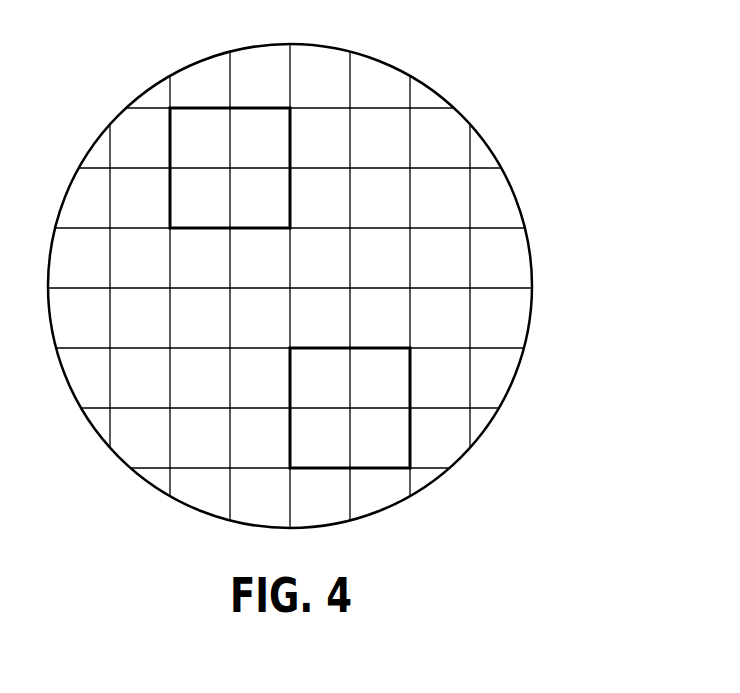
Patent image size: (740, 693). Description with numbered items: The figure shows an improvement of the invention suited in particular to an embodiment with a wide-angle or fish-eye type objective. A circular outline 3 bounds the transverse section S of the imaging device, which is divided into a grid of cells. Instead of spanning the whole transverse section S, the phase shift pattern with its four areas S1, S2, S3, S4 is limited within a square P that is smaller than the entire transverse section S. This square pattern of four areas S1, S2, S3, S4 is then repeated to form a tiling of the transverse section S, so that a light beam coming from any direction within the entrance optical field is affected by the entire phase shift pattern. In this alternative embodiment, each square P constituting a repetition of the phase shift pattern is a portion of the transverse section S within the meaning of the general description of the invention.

The wafer 3 is at (461, 112).
The transverse section S is at (513, 178).
The square P is at (198, 103).
The area S1 is at (218, 152).
The area S2 is at (278, 152).
The area S3 is at (278, 212).
The area S4 is at (218, 212).